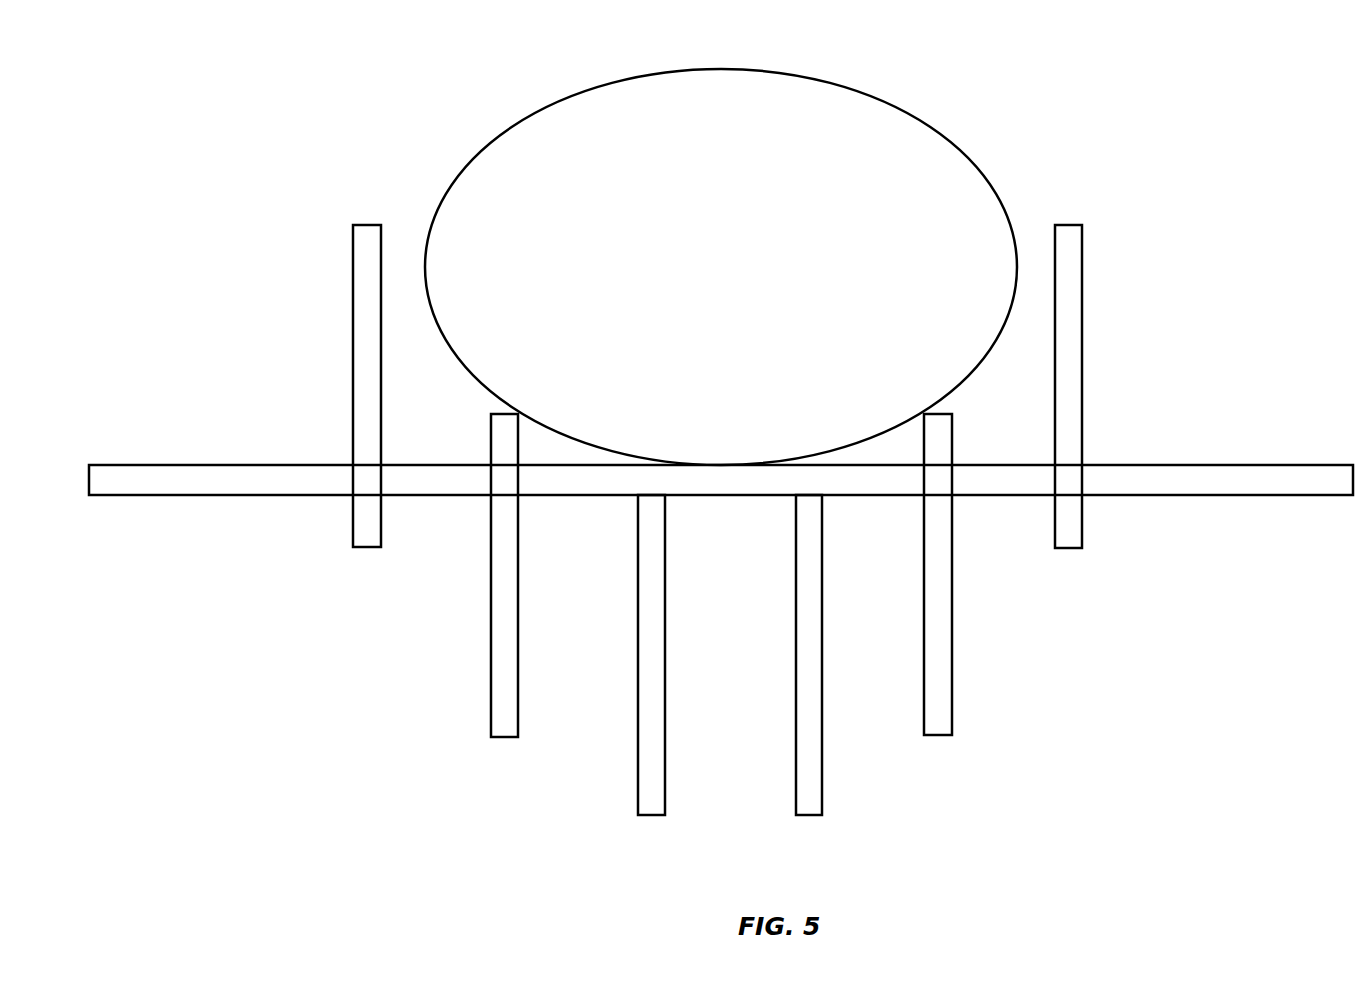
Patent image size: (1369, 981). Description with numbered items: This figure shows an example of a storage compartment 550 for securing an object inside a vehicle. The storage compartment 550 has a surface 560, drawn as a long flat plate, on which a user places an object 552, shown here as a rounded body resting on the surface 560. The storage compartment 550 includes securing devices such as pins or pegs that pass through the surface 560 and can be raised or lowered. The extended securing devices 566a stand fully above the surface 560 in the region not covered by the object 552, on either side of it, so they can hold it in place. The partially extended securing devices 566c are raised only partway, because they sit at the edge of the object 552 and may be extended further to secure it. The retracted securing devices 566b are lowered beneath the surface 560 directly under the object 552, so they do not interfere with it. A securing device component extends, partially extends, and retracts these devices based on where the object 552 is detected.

The storage compartment 550 is at (130, 61).
The object 552 is at (777, 69).
The surface 560 is at (117, 464).
The extended securing devices 566a is at (353, 224).
The retracted securing devices 566b is at (653, 816).
The partially extended securing devices 566c is at (491, 680).